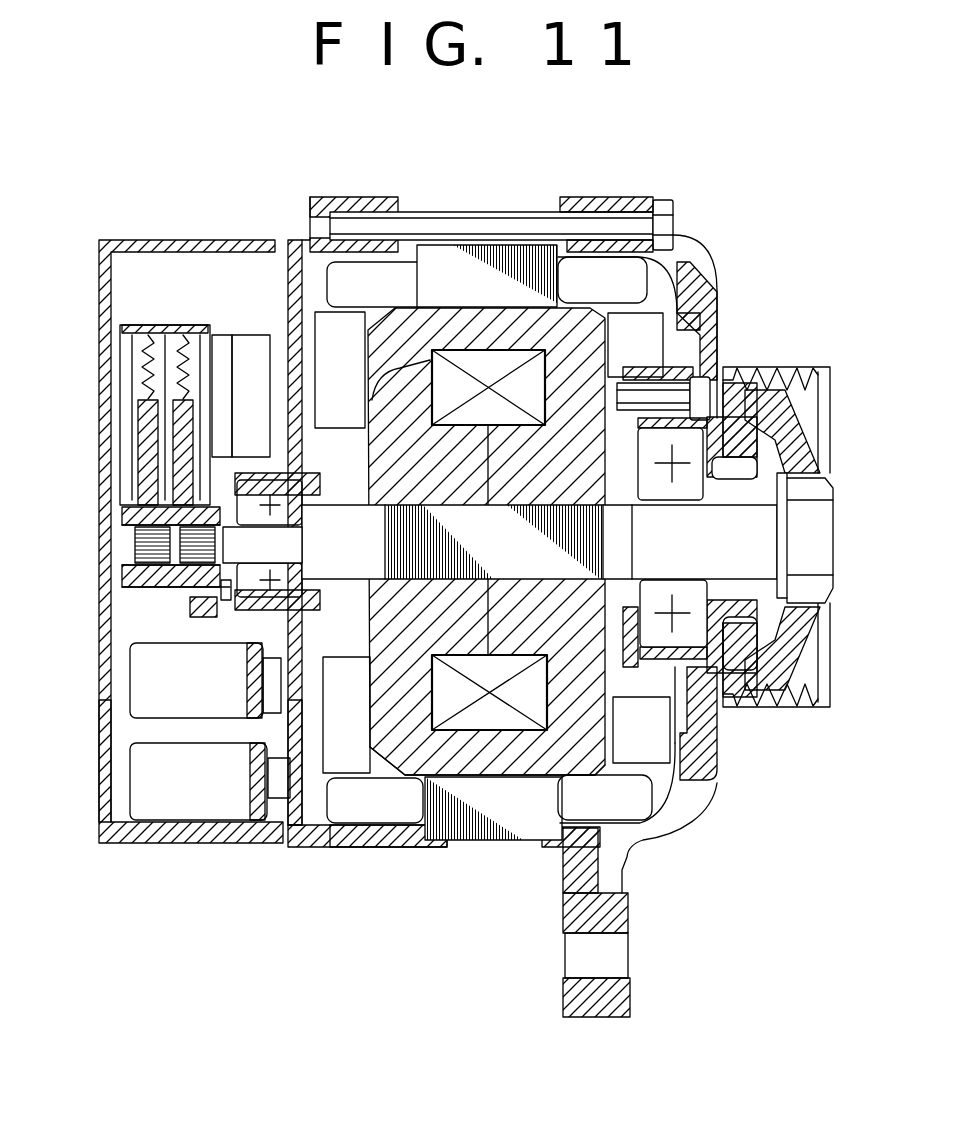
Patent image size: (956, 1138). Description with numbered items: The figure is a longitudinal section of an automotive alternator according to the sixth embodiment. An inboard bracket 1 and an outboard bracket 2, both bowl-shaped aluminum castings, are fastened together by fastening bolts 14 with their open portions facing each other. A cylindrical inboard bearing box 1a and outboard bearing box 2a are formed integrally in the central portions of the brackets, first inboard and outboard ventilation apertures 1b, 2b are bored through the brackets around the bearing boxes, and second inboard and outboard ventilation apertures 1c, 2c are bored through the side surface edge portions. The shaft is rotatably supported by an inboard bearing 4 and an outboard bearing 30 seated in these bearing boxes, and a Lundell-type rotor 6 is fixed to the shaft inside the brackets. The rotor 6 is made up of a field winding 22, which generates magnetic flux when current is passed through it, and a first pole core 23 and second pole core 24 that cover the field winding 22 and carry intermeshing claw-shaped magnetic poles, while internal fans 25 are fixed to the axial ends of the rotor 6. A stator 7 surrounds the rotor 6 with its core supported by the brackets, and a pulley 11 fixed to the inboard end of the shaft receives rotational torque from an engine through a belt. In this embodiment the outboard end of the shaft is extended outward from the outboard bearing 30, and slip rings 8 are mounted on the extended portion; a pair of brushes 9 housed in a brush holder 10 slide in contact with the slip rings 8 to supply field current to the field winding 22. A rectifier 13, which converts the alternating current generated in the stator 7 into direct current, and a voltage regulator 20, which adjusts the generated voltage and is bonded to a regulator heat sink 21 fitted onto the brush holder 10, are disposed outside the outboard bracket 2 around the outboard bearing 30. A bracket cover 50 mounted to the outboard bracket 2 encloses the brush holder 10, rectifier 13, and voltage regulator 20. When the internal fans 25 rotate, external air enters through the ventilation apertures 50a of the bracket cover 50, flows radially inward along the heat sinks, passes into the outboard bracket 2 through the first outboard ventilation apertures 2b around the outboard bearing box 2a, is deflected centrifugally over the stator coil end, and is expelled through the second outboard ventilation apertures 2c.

The inboard bracket 1 is at (718, 250).
The inboard bearing box 1a is at (690, 630).
The first inboard ventilation apertures 1b is at (707, 745).
The second inboard ventilation apertures 1c is at (675, 820).
The outboard bracket 2 is at (323, 857).
The outboard bearing box 2a is at (253, 607).
The first outboard ventilation apertures 2b is at (297, 773).
The second outboard ventilation apertures 2c is at (380, 847).
The inboard bearing 4 is at (747, 693).
The rotor 6 is at (547, 903).
The stator 7 is at (483, 277).
The slip rings 8 is at (123, 503).
The brushes 9 is at (150, 484).
The brush holder 10 is at (165, 330).
The pulley 11 is at (778, 373).
The rectifier 13 is at (220, 770).
The fastening bolts 14 is at (620, 225).
The voltage regulator 20 is at (223, 345).
The regulator heat sink 21 is at (250, 350).
The field winding 22 is at (485, 717).
The first pole core 23 is at (435, 752).
The second pole core 24 is at (540, 737).
The internal fans 25 is at (647, 337).
The outboard bearing 30 is at (257, 580).
The bracket cover 50 is at (145, 857).
The ventilation apertures 50a is at (100, 773).